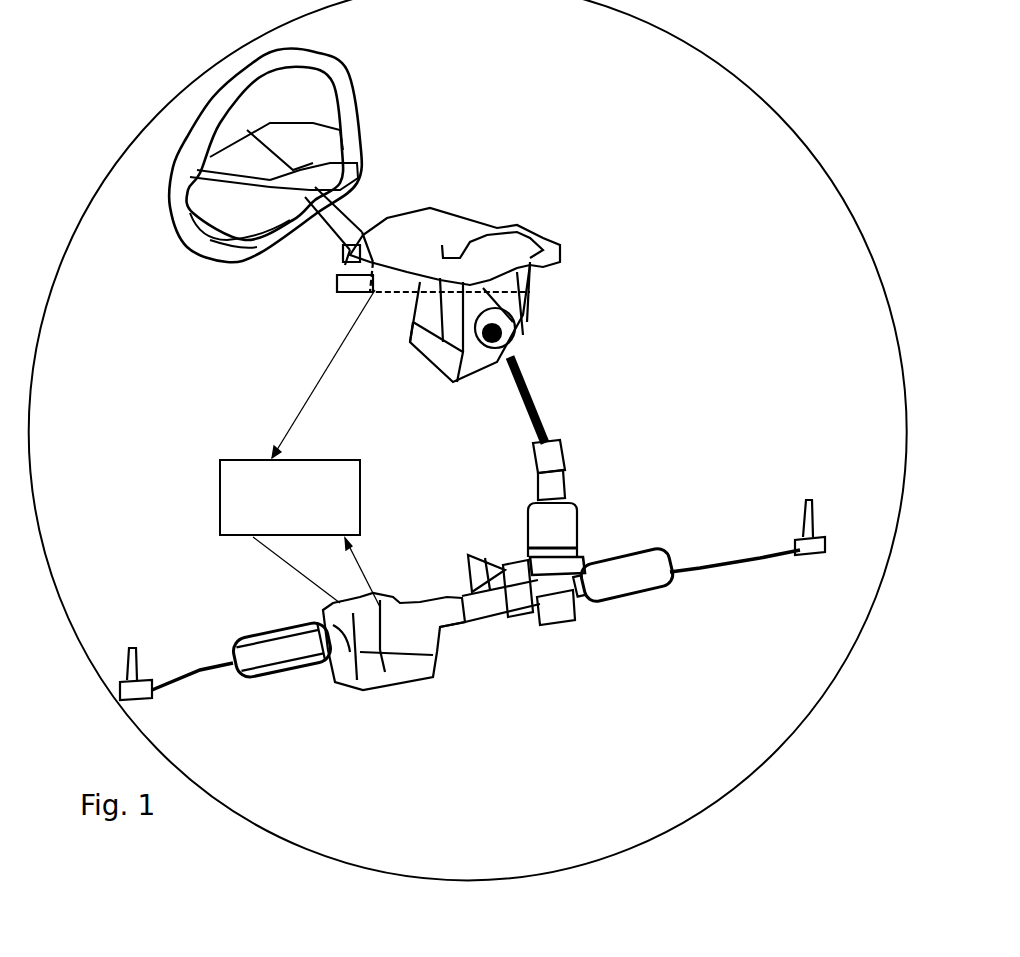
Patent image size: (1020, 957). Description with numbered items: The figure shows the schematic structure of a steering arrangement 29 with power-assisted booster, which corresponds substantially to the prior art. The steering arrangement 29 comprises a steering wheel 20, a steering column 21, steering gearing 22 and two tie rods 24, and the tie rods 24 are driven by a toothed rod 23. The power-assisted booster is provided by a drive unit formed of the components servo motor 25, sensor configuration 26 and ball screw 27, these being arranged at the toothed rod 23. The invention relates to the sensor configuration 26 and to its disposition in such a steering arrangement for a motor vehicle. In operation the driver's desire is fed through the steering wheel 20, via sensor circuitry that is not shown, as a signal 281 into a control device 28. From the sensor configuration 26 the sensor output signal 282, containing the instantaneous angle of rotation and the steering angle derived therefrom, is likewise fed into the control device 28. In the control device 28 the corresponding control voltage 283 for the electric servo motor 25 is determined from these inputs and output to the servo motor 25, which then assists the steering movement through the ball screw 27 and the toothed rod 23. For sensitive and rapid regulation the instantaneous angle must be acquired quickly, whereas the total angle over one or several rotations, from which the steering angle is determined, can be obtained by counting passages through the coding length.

The steering wheel 20 is at (342, 73).
The steering column 21 is at (583, 227).
The steering gearing 22 is at (580, 551).
The toothed rod 23 is at (540, 617).
The tie rods 24 is at (745, 563).
The servo motor 25 is at (363, 627).
The sensor configuration 26 is at (390, 624).
The ball screw 27 is at (425, 616).
The control device 28 is at (303, 509).
The signal 281 is at (305, 411).
The sensor output signal 282 is at (362, 585).
The control voltage 283 is at (312, 588).
The steering arrangement 29 is at (88, 369).